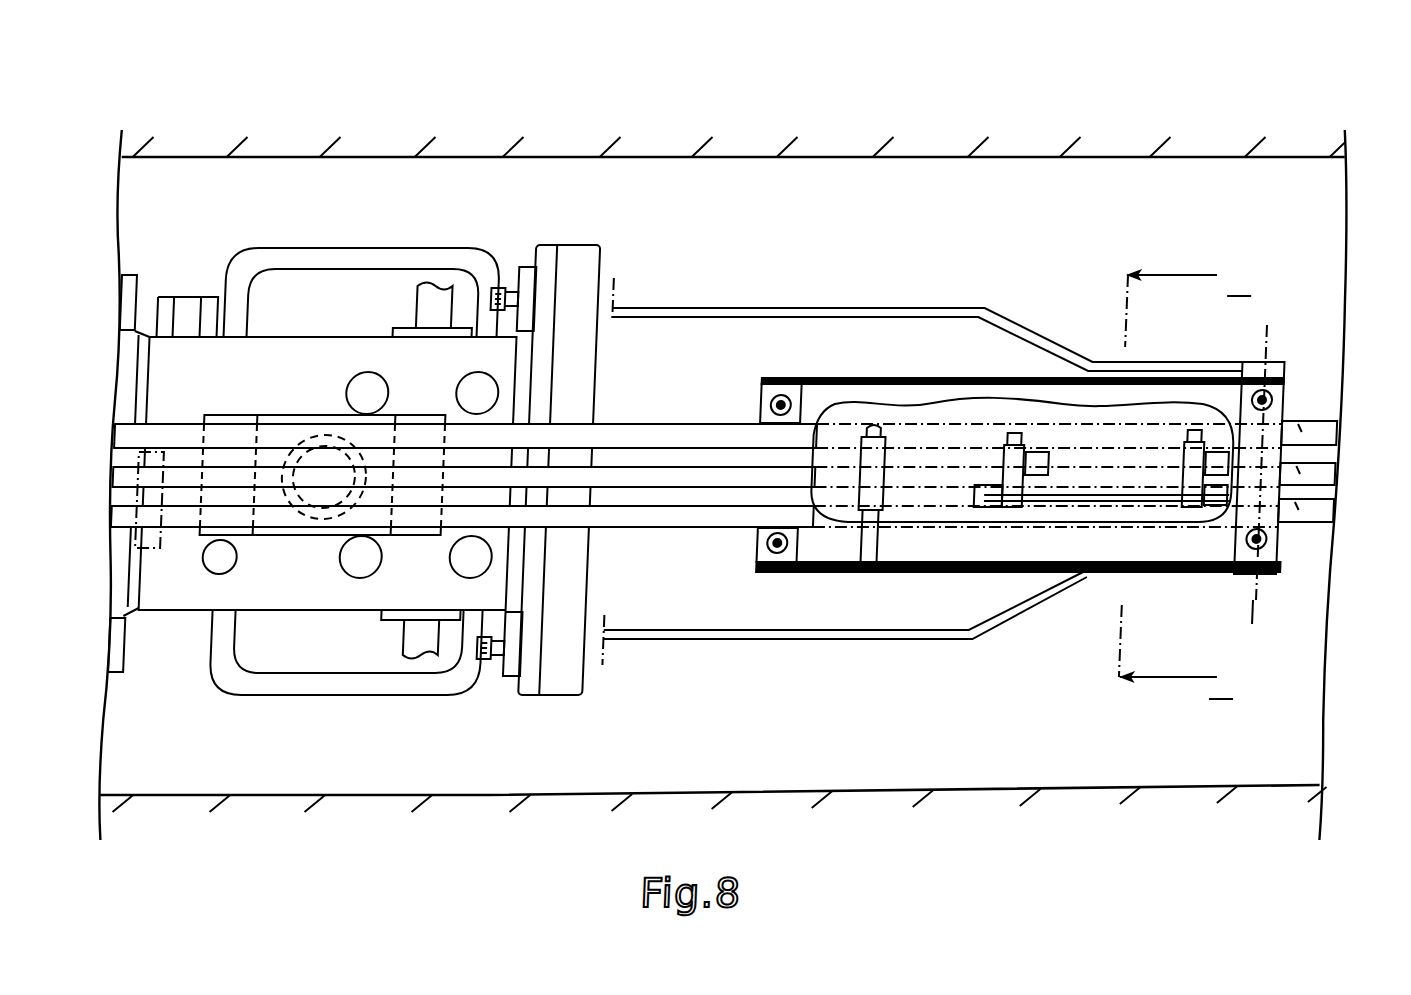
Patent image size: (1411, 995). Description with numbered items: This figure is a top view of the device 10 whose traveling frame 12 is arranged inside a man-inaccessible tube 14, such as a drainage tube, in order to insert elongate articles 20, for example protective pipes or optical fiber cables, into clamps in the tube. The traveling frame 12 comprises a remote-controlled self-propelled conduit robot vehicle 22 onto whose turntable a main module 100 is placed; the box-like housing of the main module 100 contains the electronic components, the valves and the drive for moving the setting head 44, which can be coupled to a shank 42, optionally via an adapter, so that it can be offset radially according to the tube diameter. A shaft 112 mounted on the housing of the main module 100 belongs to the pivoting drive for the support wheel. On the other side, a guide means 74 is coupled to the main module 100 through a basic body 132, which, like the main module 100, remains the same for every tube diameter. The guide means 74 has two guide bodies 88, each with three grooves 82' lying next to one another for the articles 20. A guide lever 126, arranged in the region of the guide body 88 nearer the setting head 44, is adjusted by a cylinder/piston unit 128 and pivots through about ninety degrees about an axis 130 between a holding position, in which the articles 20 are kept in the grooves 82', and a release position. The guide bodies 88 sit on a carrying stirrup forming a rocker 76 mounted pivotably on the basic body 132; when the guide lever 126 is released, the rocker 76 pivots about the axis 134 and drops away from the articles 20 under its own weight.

The device 10 is at (625, 278).
The traveling frame 12 is at (135, 608).
The man-inaccessible tube 14 is at (894, 155).
The elongate articles 20 is at (631, 430).
The self-propelled conduit robot vehicle 22 is at (115, 262).
The shank 42 is at (293, 435).
The setting head 44 is at (265, 410).
The guide means 74 is at (941, 372).
The rocker 76 is at (1006, 376).
The grooves 82' is at (1045, 470).
The guide bodies 88 is at (799, 400).
The main module 100 is at (294, 615).
The shaft 112 is at (418, 305).
The guide lever 126 is at (868, 430).
The cylinder/piston unit 128 is at (1056, 505).
The axis 130 is at (873, 560).
The basic body 132 is at (707, 305).
The axis 134 is at (1258, 612).